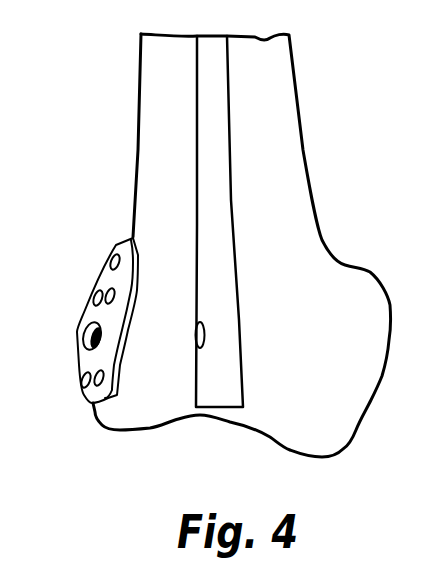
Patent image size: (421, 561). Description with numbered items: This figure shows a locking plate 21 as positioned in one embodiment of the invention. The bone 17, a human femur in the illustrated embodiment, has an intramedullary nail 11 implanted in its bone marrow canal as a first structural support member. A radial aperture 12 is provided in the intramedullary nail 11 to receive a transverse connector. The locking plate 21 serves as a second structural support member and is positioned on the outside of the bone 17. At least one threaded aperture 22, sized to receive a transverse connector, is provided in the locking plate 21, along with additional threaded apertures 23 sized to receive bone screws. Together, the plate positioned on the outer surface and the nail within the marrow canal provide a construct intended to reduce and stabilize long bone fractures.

The intramedullary nail 11 is at (232, 383).
The radial aperture 12 is at (196, 335).
The bone 17 is at (330, 414).
The locking plate 21 is at (93, 360).
The threaded aperture 22 is at (86, 338).
The threaded apertures 23 is at (97, 290).